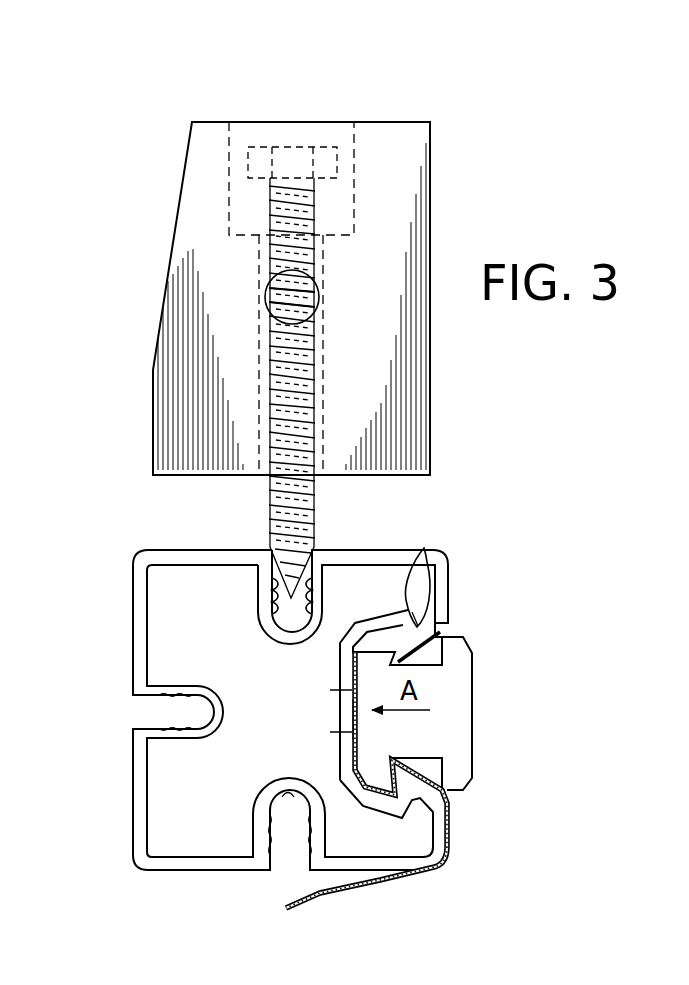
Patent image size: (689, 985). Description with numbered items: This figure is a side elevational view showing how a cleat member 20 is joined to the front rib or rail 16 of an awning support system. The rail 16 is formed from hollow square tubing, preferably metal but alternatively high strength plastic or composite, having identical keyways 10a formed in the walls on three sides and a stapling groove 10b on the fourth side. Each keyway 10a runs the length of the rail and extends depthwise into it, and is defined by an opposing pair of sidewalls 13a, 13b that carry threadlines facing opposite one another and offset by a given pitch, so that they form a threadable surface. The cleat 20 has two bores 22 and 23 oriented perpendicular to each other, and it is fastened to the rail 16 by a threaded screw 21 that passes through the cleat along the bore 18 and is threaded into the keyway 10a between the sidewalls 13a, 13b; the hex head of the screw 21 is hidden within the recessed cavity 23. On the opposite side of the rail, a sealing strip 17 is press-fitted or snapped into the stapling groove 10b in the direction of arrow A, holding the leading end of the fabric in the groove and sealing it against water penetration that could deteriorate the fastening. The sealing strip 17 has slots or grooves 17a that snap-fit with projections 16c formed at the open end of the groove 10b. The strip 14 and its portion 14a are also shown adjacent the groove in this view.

The cleat member 20 is at (147, 428).
The threaded screw 21 is at (290, 143).
The bore 22 is at (273, 298).
The recessed cavity 23 is at (352, 145).
The screw bore 18 is at (318, 355).
The keyway 10a is at (262, 548).
The stapling groove 10b is at (452, 622).
The sidewall 13a is at (272, 590).
The sidewall 13b is at (313, 598).
The elastomeric strip 14 is at (345, 892).
The strip wall portion 14a is at (357, 722).
The front rib or rail 16 is at (288, 722).
The projections 16c is at (424, 548).
The sealing strip 17 is at (465, 680).
The slots or grooves 17a is at (430, 668).